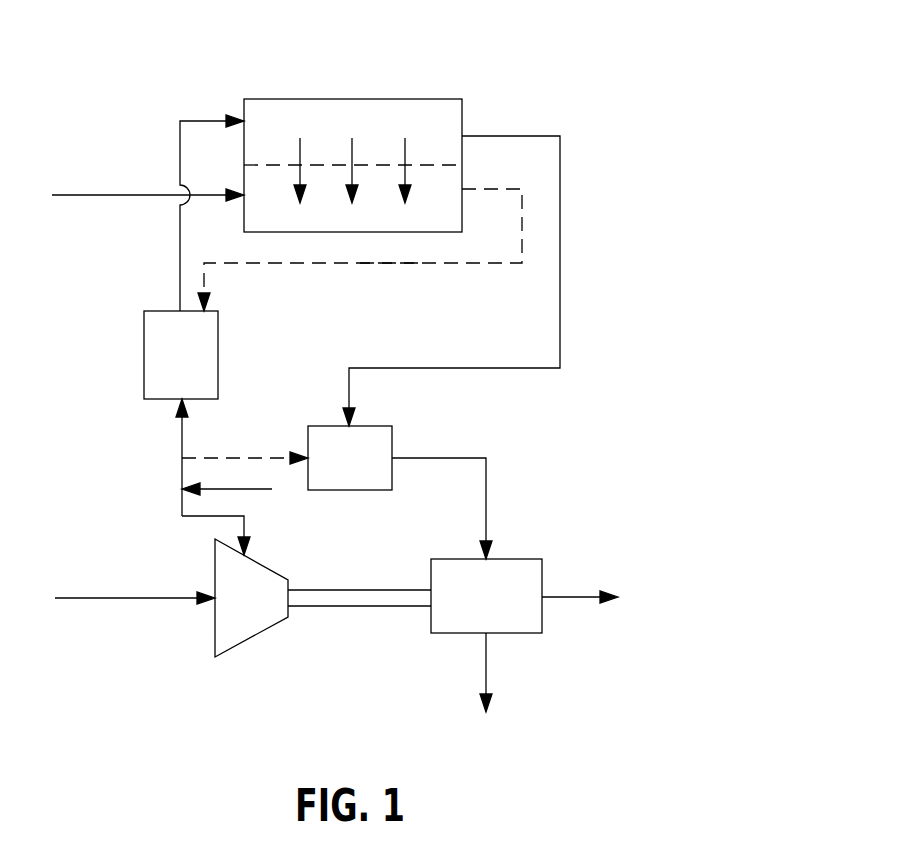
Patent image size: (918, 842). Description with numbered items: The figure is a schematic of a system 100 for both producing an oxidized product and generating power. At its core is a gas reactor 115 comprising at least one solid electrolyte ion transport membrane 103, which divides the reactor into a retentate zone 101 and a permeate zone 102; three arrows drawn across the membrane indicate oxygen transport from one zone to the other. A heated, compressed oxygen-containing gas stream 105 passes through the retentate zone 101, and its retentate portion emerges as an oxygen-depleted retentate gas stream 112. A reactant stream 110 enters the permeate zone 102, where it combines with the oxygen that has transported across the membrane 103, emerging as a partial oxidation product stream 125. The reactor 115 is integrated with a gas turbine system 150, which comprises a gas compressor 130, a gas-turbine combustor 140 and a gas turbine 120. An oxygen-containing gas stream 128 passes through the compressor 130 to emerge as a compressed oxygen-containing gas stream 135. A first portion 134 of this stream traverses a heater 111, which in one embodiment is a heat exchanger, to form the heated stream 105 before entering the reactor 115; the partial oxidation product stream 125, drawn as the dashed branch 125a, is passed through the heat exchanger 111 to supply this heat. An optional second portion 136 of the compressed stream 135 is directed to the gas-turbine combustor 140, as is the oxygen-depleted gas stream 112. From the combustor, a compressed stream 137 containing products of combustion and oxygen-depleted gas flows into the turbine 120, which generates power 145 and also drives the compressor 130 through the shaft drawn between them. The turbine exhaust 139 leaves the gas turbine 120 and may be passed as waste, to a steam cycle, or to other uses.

The system 100 is at (135, 688).
The retentate zone 101 is at (338, 131).
The permeate zone 102 is at (348, 231).
The solid electrolyte ion transport membrane 103 is at (397, 165).
The oxygen-containing gas stream 105 is at (210, 118).
The reactant stream 110 is at (133, 195).
The heater 111 is at (204, 364).
The oxygen-depleted retentate gas stream 112 is at (560, 226).
The gas reactor 115 is at (457, 85).
The gas turbine 120 is at (508, 609).
The partial oxidation product stream 125 is at (483, 189).
The partial oxidation product stream 125a is at (368, 263).
The oxygen-containing gas stream 128 is at (152, 598).
The gas compressor 130 is at (273, 611).
The first portion 134 is at (180, 451).
The compressed oxygen-containing gas stream 135 is at (254, 490).
The second portion 136 is at (217, 458).
The compressed stream 137 is at (442, 458).
The turbine exhaust 139 is at (486, 663).
The gas-turbine combustor 140 is at (372, 475).
The power 145 is at (562, 597).
The gas turbine system 150 is at (542, 507).